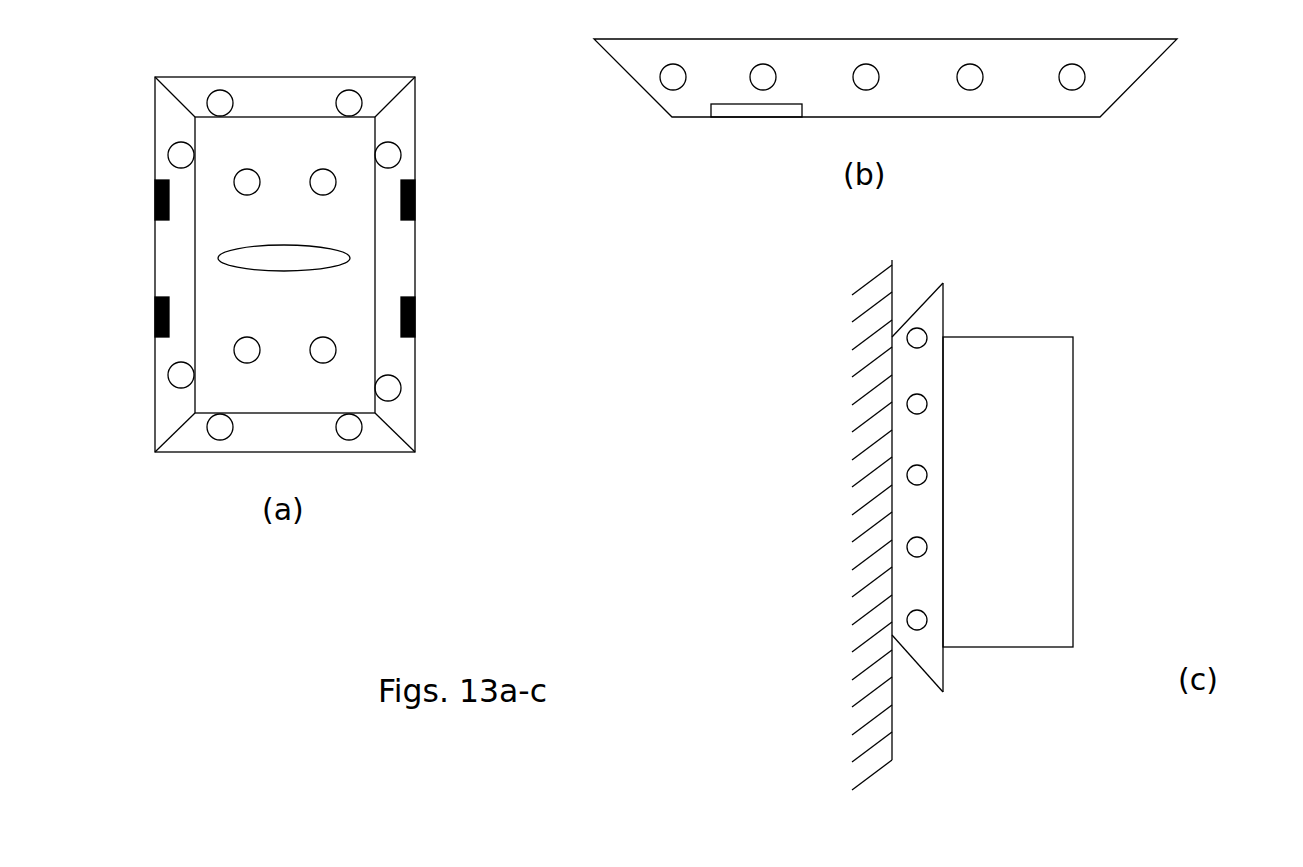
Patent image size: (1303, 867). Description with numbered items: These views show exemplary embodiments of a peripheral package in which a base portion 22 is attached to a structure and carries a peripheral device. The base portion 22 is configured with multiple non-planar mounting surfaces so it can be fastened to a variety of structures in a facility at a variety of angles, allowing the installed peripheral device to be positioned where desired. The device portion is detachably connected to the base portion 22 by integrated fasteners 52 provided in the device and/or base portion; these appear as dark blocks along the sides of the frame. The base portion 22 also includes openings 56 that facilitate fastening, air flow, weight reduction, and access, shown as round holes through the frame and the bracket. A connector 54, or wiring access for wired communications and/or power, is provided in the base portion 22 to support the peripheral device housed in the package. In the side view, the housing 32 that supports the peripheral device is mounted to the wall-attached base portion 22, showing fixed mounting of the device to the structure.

In FIG. 13A, the base portion 22 is at (353, 453).
In FIG. 13B, the base portion 22 is at (1013, 117).
In FIG. 13C, the base portion 22 is at (943, 292).
In FIG. 13A, the integrated fasteners 52 is at (417, 197).
In FIG. 13A, the openings 56 is at (392, 388).
In FIG. 13B, the connector 54 is at (760, 117).
In FIG. 13C, the housing 32 is at (1073, 445).